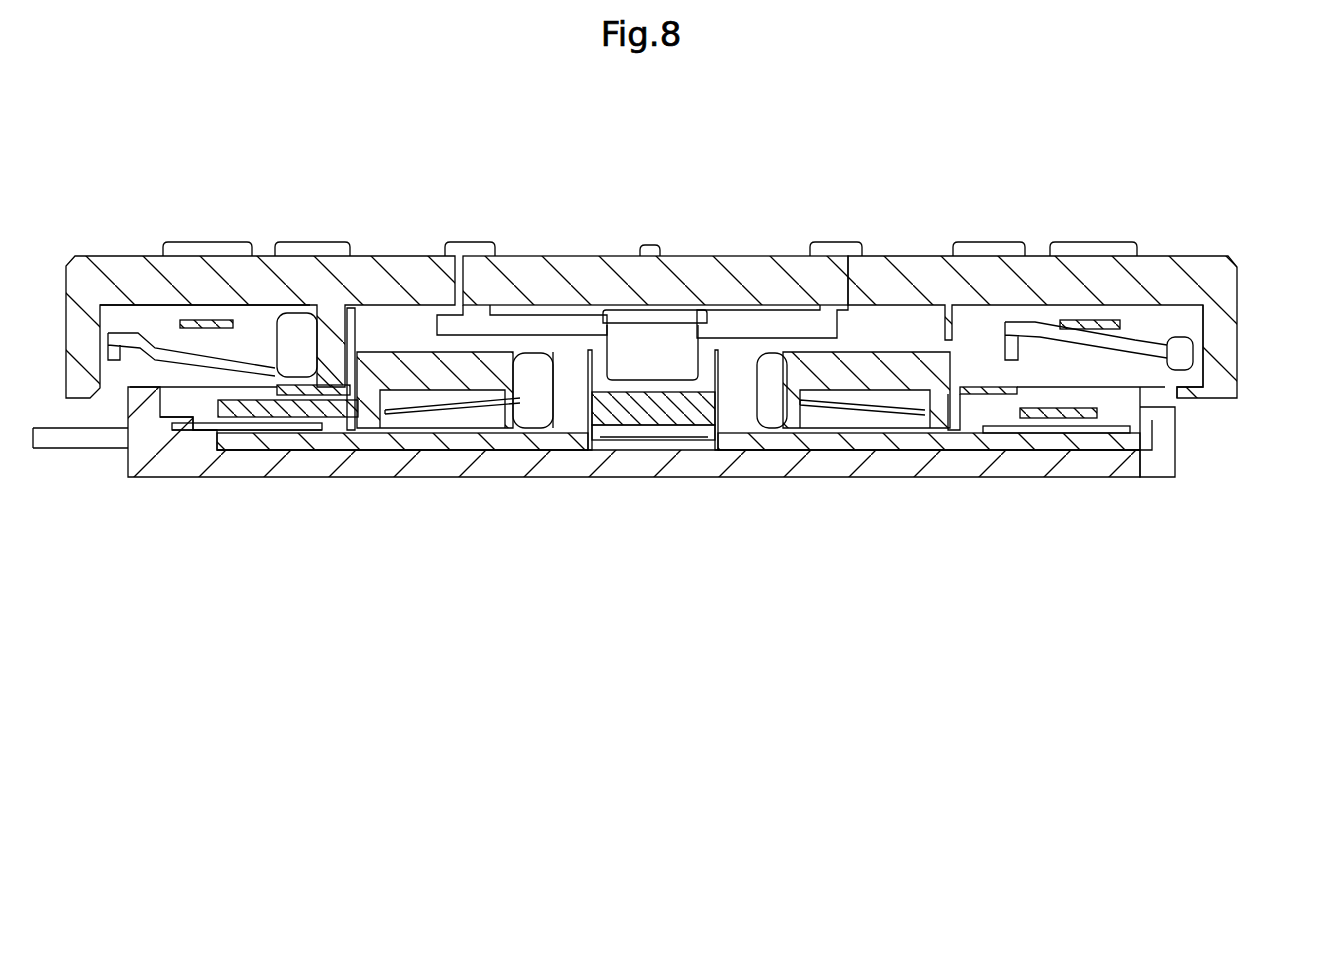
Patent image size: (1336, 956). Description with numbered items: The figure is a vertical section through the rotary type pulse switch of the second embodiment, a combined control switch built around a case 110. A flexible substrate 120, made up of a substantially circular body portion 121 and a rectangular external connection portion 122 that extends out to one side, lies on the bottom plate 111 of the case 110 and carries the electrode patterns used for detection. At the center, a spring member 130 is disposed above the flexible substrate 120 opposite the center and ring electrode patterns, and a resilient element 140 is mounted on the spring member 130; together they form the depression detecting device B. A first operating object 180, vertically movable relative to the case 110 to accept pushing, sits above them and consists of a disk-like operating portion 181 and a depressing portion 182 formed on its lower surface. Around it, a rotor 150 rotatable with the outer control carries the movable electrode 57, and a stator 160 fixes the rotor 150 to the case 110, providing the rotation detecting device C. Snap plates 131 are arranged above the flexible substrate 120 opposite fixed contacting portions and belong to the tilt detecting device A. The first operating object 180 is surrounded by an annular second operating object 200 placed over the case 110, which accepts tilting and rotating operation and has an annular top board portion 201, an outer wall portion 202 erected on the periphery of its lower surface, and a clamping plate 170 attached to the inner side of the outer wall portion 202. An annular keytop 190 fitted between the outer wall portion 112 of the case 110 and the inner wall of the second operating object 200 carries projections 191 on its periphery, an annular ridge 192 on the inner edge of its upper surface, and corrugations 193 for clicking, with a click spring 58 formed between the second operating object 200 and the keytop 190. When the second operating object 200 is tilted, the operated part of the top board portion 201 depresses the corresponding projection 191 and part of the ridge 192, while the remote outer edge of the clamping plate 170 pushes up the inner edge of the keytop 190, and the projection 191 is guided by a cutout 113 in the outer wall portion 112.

The movable electrode 57 is at (392, 415).
The click spring 58 is at (1090, 318).
The case 110 is at (960, 483).
The bottom plate 111 is at (865, 462).
The outer wall portion 112 is at (1180, 412).
The cutout 113 is at (1162, 433).
The flexible substrate 120 is at (125, 498).
The body portion 121 is at (182, 428).
The external connection portion 122 is at (92, 445).
The spring member 130 is at (693, 450).
The snap plate 131 is at (272, 430).
The resilient element 140 is at (628, 383).
The rotor 150 is at (465, 370).
The stator 160 is at (532, 400).
The clamping plate 170 is at (980, 432).
The first operating object 180 is at (642, 248).
The operating portion 181 is at (735, 275).
The depressing portion 182 is at (660, 350).
The keytop 190 is at (125, 330).
The projection 191 is at (1180, 356).
The ridge 192 is at (337, 432).
The corrugations 193 is at (1175, 303).
The second operating object 200 is at (1174, 240).
The top board portion 201 is at (410, 280).
The outer wall portion 202 is at (1220, 334).
The tilt detecting device A is at (221, 432).
The depression detecting device B is at (635, 440).
The rotation detecting device C is at (552, 423).